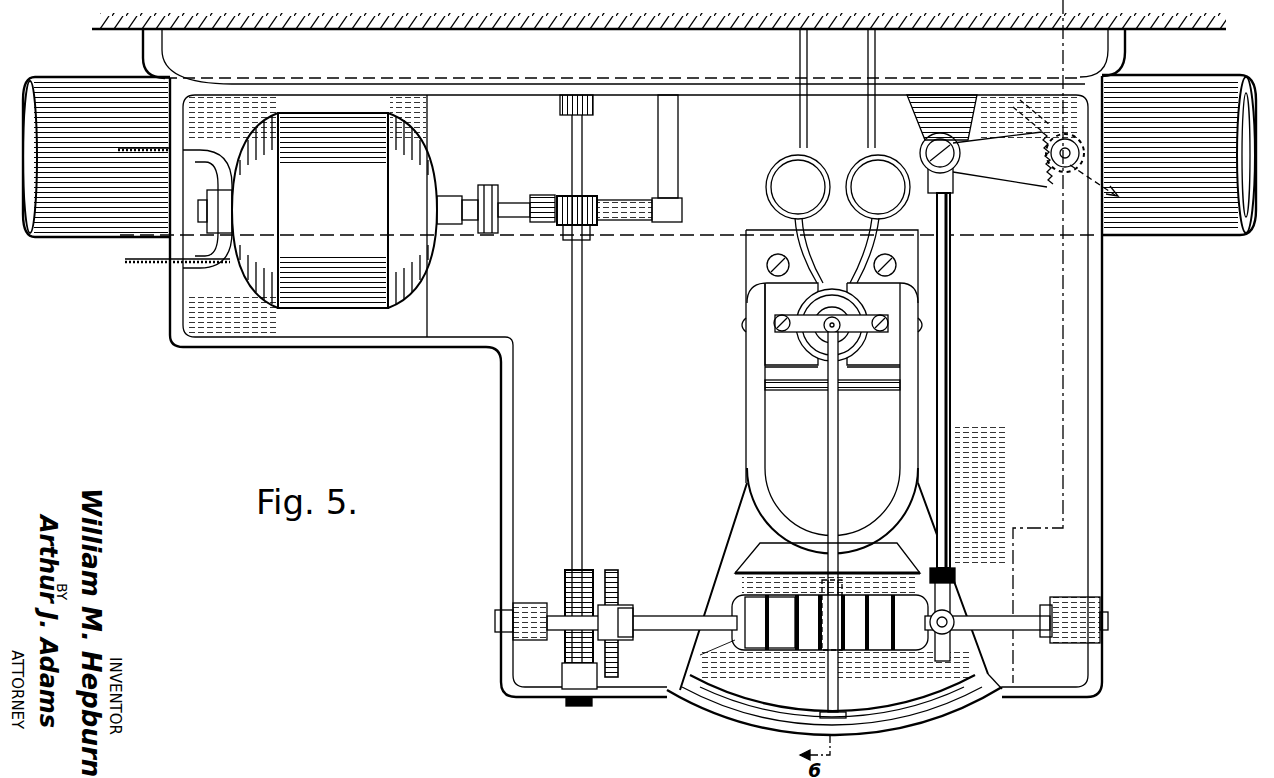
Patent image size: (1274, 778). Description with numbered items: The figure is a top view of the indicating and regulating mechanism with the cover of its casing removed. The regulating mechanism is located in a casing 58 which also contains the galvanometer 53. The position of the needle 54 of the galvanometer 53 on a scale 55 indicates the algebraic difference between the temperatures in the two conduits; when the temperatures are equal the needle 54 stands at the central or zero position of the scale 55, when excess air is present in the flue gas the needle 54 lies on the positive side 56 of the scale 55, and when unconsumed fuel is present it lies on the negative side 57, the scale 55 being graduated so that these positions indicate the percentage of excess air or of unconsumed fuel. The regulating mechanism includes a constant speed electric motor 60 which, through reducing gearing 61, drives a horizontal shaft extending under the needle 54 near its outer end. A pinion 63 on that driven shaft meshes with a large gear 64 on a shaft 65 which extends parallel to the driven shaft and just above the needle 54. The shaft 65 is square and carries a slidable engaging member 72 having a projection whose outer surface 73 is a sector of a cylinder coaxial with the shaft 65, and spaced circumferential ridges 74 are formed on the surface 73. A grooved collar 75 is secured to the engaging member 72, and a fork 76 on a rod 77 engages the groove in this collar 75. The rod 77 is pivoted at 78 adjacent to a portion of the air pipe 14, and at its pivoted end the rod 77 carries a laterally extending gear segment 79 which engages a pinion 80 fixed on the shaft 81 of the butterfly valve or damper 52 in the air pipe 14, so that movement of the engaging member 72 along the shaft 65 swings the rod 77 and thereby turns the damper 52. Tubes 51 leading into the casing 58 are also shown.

The air pipe 14 is at (80, 238).
The bellows tube 51 is at (800, 125).
The damper 52 is at (1120, 190).
The galvanometer 53 is at (883, 302).
The needle 54 is at (838, 458).
The scale 55 is at (850, 712).
The positive side 56 is at (785, 702).
The negative side 57 is at (915, 692).
The casing 58 is at (1095, 382).
The constant speed electric motor 60 is at (376, 210).
The reducing gearing 61 is at (590, 225).
The pinion 63 is at (620, 612).
The large gear 64 is at (620, 582).
The shaft 65 is at (680, 616).
The engaging member 72 is at (876, 600).
The outer surface 73 is at (782, 600).
The circumferential ridges 74 is at (822, 608).
The grooved collar 75 is at (953, 620).
The fork 76 is at (952, 598).
The rod 77 is at (950, 388).
The pivot 78 is at (943, 140).
The gear segment 79 is at (1020, 170).
The pinion 80 is at (1068, 140).
The shaft 81 is at (1085, 155).